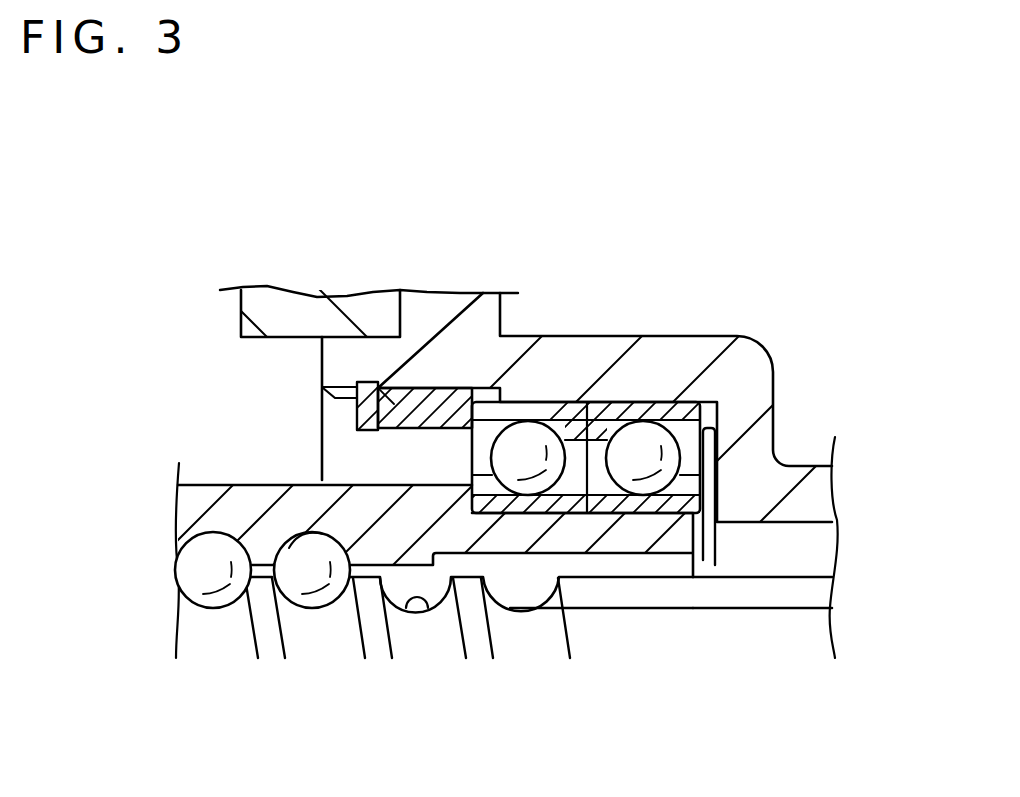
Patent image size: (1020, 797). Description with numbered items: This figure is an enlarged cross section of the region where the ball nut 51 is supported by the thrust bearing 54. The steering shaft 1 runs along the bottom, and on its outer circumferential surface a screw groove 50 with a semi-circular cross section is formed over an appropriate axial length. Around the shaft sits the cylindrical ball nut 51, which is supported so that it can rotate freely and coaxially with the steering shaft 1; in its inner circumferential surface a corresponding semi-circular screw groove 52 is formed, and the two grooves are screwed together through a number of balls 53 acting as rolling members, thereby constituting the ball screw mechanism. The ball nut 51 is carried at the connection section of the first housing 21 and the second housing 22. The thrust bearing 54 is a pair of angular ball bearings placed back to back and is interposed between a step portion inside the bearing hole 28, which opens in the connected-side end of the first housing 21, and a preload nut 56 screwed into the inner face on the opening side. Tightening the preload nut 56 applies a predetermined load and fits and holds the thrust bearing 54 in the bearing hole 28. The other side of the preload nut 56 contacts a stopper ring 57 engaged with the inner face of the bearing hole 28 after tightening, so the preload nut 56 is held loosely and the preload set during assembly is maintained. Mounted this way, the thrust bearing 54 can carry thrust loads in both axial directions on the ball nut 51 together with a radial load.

The steering shaft 1 is at (783, 580).
The first housing 21 is at (698, 343).
The second housing 22 is at (250, 304).
The bearing hole 28 is at (341, 399).
The screw groove 50 is at (433, 580).
The ball nut 51 is at (305, 490).
The screw groove 52 is at (287, 541).
The balls 53 is at (218, 609).
The thrust bearing 54 is at (635, 432).
The preload nut 56 is at (428, 408).
The stopper ring 57 is at (357, 402).